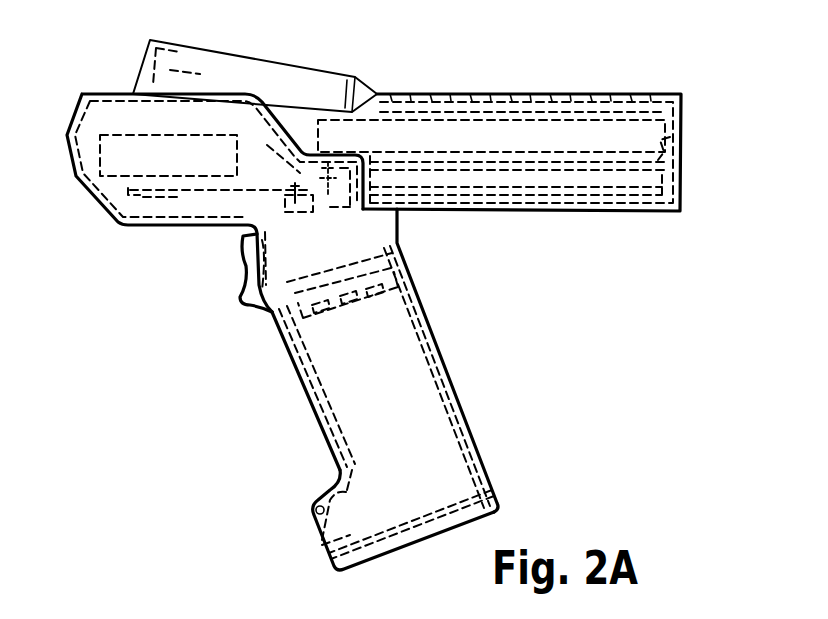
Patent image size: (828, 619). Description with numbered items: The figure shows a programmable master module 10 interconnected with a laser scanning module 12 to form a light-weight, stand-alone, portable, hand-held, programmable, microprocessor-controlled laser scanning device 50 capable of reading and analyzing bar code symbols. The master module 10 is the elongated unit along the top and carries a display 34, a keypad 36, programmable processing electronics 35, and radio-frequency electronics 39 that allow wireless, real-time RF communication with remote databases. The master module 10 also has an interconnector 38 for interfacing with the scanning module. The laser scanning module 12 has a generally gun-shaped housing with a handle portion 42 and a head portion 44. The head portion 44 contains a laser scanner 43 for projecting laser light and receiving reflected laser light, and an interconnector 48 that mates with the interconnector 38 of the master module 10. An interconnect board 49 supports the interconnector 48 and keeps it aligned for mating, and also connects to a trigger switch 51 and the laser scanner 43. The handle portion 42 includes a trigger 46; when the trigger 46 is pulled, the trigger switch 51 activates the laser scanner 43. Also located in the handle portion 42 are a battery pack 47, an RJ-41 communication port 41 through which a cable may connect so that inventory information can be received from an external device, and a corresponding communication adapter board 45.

The master module 10 is at (683, 93).
The laser scanning module 12 is at (421, 542).
The display 34 is at (262, 57).
The programmable processing electronics 35 is at (688, 140).
The keypad 36 is at (553, 93).
The interconnector 38 is at (268, 152).
The RF electronics 39 is at (683, 186).
The RJ-41 communication port 41 is at (320, 548).
The handle portion 42 is at (480, 450).
The laser scanner 43 is at (157, 169).
The head portion 44 is at (99, 92).
The communication adapter board 45 is at (310, 398).
The trigger 46 is at (243, 265).
The battery pack 47 is at (422, 372).
The interconnector 48 is at (329, 206).
The interconnect board 49 is at (219, 202).
The laser scanning device 50 is at (466, 260).
The trigger switch 51 is at (293, 221).